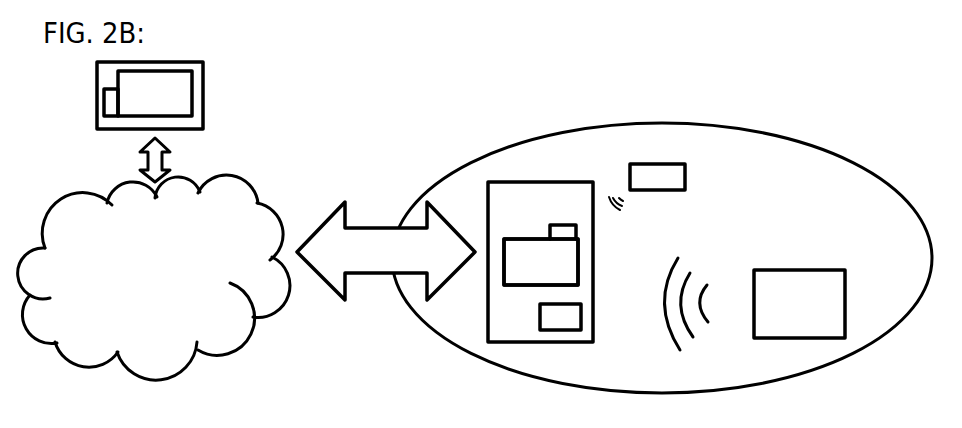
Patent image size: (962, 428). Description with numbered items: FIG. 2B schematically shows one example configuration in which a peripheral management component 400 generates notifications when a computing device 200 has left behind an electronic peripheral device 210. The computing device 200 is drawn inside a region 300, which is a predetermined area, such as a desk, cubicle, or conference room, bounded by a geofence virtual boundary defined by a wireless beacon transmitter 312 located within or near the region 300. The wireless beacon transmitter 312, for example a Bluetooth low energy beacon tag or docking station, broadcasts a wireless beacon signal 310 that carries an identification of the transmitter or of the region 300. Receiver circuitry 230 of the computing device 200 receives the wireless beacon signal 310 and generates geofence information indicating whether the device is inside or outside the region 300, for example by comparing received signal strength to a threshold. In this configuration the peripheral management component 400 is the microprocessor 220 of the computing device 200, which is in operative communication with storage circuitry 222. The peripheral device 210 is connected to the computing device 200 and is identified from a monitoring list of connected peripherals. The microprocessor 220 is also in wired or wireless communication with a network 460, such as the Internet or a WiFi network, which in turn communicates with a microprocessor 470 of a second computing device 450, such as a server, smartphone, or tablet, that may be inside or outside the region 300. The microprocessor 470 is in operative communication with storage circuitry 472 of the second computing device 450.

The second computing device 450 is at (206, 70).
The microprocessor 470 is at (194, 92).
The storage circuitry 472 is at (102, 102).
The network 460 is at (175, 266).
The computing device 200 is at (517, 180).
The storage circuitry 222 is at (558, 223).
The peripheral management component 400 is at (560, 276).
The microprocessor 220 is at (530, 287).
The receiver circuitry 230 is at (563, 332).
The region 300 is at (763, 130).
The peripheral device 210 is at (660, 162).
The wireless beacon signal 310 is at (693, 249).
The wireless beacon transmitter 312 is at (804, 268).